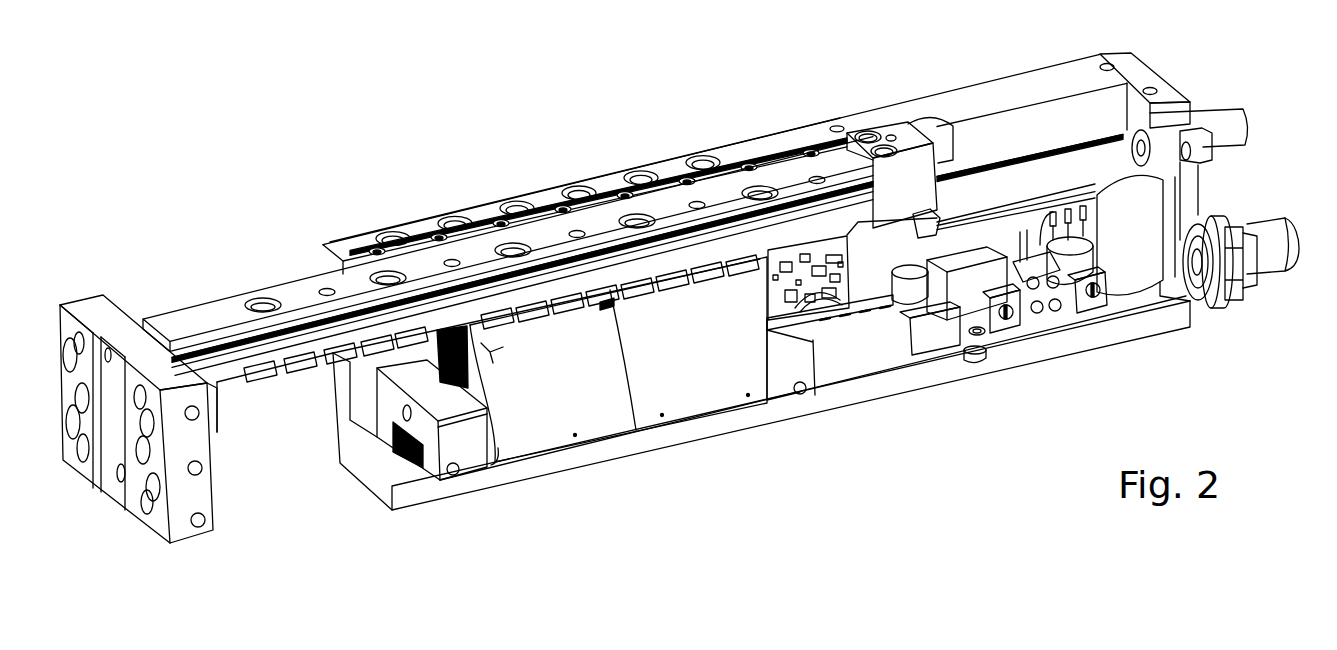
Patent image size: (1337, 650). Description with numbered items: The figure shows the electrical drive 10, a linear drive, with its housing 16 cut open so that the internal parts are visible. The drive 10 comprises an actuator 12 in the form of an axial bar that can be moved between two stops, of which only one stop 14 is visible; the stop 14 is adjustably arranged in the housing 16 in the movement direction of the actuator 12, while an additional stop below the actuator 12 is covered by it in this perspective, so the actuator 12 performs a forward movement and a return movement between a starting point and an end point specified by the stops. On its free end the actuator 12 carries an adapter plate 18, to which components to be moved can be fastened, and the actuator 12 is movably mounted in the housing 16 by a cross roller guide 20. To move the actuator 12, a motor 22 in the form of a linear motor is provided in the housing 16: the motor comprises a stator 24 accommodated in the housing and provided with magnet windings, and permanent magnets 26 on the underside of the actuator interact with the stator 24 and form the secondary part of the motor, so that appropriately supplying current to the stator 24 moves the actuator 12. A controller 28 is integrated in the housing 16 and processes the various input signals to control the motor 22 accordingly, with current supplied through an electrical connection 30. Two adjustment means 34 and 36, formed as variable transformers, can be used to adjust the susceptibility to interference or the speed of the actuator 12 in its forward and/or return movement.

The electrical drive 10 is at (661, 128).
The actuator 12 is at (293, 296).
The stop 14 is at (1227, 127).
The housing 16 is at (1025, 90).
The adapter plate 18 is at (183, 520).
The cross roller guide 20 is at (485, 230).
The motor 22 is at (534, 418).
The stator 24 is at (450, 376).
The permanent magnets 26 is at (267, 372).
The controller 28 is at (877, 320).
The electrical connection 30 is at (1277, 270).
The adjustment means 34 is at (1105, 298).
The adjustment means 36 is at (1018, 318).